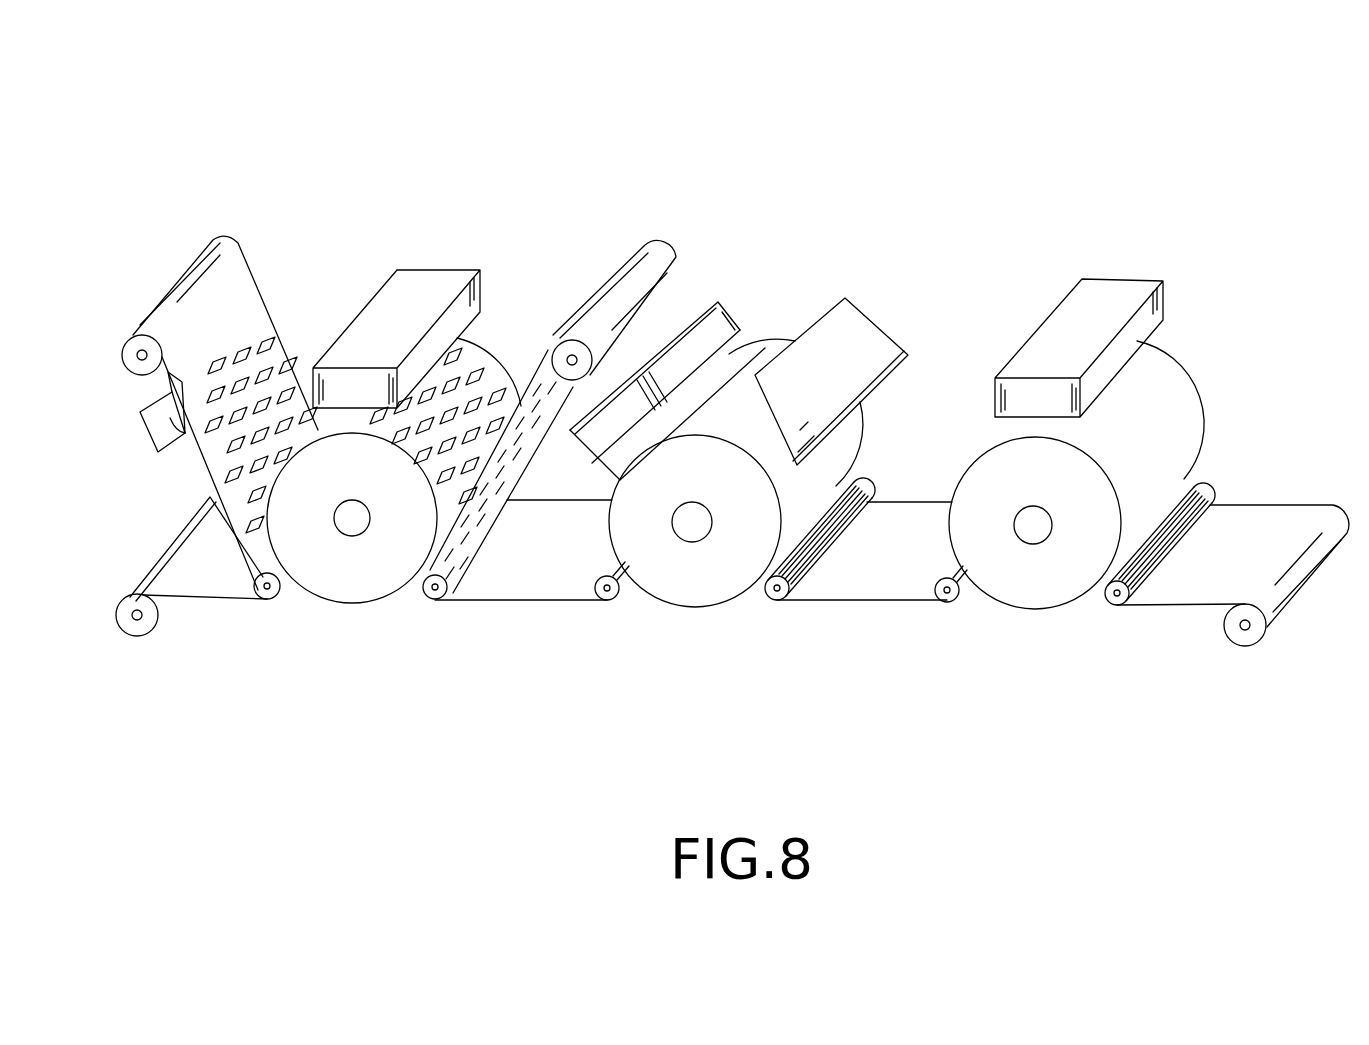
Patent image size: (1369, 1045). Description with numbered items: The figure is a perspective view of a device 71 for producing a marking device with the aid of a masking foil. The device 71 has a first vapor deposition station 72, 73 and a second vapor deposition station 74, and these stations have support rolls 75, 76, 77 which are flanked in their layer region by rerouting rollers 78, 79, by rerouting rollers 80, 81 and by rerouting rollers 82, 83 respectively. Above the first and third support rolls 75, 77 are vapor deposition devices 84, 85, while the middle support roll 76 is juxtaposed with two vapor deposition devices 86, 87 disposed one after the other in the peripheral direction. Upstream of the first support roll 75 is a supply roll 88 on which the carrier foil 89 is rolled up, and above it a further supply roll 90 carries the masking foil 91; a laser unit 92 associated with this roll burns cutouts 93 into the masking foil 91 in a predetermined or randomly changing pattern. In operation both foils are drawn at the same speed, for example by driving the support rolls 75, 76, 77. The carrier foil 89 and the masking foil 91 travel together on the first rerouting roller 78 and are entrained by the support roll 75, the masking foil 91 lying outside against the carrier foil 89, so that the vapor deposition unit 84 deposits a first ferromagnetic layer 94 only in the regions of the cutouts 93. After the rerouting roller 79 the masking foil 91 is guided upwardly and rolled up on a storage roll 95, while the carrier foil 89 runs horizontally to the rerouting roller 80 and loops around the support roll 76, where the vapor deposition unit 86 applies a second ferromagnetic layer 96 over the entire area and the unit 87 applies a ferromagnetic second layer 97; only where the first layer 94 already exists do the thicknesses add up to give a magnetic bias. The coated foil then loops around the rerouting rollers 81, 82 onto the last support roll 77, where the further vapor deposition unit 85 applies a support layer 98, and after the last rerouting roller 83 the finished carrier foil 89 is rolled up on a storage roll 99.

The device 71 is at (926, 244).
The first vapor deposition station 72 is at (458, 244).
The first vapor deposition station 73 is at (787, 285).
The second vapor deposition station 74 is at (1102, 250).
The support roll 75 is at (352, 604).
The support roll 76 is at (764, 511).
The support roll 77 is at (1100, 507).
The rerouting roller 78 is at (265, 600).
The rerouting roller 79 is at (435, 600).
The rerouting roller 80 is at (607, 600).
The rerouting roller 81 is at (777, 600).
The rerouting roller 82 is at (947, 603).
The rerouting roller 83 is at (1117, 606).
The vapor deposition device 84 is at (402, 290).
The vapor deposition device 85 is at (1150, 290).
The vapor deposition device 86 is at (717, 300).
The vapor deposition device 87 is at (857, 306).
The supply roll 88 is at (141, 620).
The carrier foil 89 is at (195, 605).
The further supply roll 90 is at (142, 352).
The masking foil 91 is at (319, 389).
The laser unit 92 is at (150, 437).
The cutouts 93 is at (262, 335).
The first ferromagnetic layer 94 is at (497, 385).
The storage roll 95 is at (572, 356).
The second ferromagnetic layer 96 is at (770, 343).
The ferromagnetic second layer 97 is at (870, 440).
The support layer 98 is at (1178, 397).
The storage roll 99 is at (1245, 631).